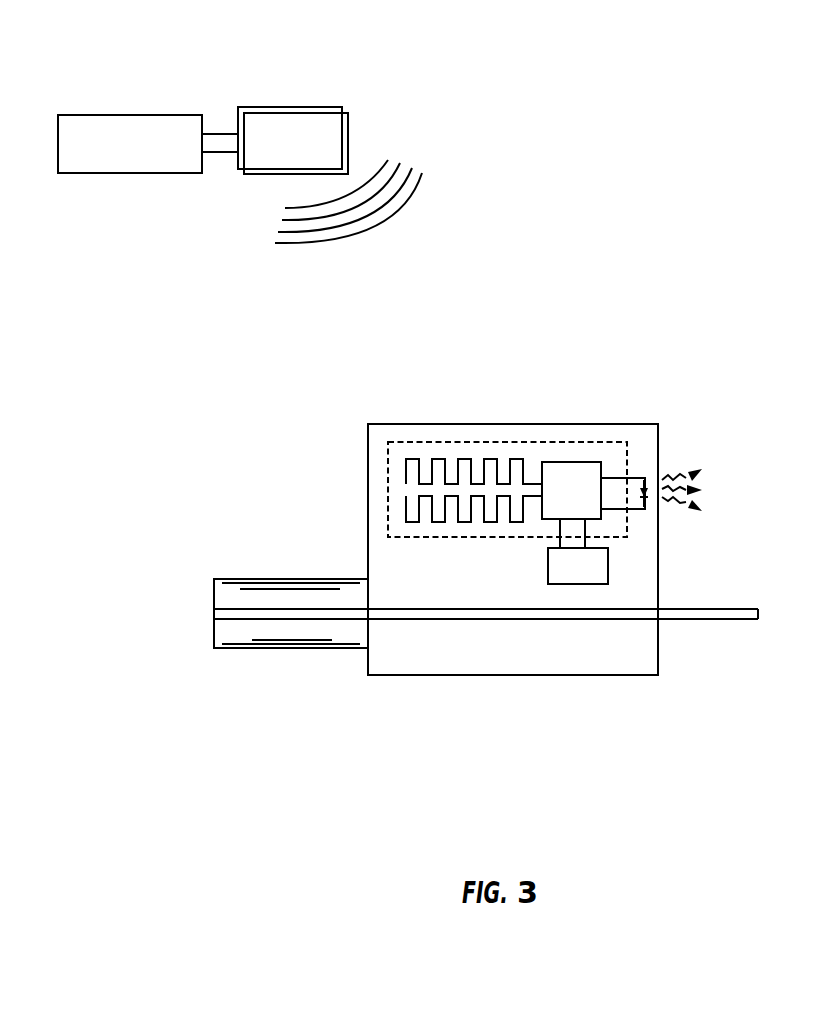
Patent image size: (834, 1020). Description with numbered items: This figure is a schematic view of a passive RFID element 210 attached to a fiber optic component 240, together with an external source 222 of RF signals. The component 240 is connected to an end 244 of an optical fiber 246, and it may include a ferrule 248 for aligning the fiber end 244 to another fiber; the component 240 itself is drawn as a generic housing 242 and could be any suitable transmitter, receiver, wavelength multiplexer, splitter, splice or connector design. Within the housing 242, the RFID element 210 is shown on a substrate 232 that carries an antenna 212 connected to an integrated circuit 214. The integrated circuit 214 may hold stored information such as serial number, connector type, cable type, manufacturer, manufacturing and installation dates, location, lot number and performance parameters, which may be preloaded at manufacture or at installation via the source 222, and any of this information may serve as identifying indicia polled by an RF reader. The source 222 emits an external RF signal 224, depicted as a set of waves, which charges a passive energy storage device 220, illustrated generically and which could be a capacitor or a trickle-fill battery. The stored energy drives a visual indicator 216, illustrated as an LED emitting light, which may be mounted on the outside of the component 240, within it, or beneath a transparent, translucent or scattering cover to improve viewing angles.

The passive RFID element 210 is at (545, 366).
The antenna 212 is at (453, 495).
The integrated circuit 214 is at (572, 460).
The visual indicator 216 is at (645, 478).
The passive energy storage device 220 is at (608, 565).
The source 222 is at (252, 66).
The external RF signal 224 is at (363, 227).
The substrate 232 is at (478, 440).
The fiber optic component 240 is at (322, 460).
The housing 242 is at (438, 675).
The end 244 is at (215, 613).
The optical fiber 246 is at (705, 620).
The ferrule 248 is at (305, 578).